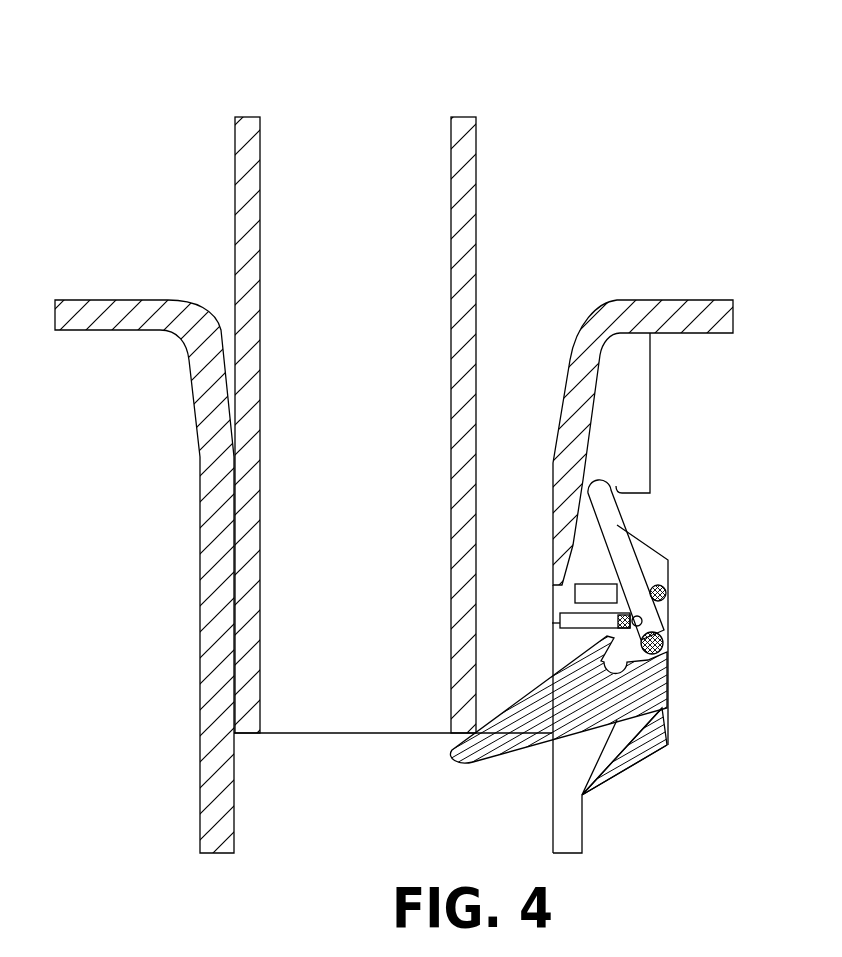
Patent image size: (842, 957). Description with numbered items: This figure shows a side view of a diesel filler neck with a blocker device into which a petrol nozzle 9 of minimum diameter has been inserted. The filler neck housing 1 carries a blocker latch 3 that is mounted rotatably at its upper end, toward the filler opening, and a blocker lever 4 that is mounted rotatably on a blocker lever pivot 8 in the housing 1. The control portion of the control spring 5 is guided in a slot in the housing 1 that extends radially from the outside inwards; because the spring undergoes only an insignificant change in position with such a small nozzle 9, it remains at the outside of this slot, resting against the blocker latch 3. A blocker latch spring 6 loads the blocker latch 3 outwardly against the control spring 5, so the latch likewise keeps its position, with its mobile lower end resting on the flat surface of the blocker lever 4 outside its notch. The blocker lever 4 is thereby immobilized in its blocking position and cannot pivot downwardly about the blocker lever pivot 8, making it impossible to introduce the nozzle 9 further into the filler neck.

The filler neck housing 1 is at (608, 320).
The blocker latch 3 is at (625, 557).
The blocker lever 4 is at (552, 737).
The control spring 5 is at (661, 591).
The blocker latch spring 6 is at (642, 621).
The blocker lever pivot 8 is at (533, 719).
The nozzle 9 is at (328, 165).